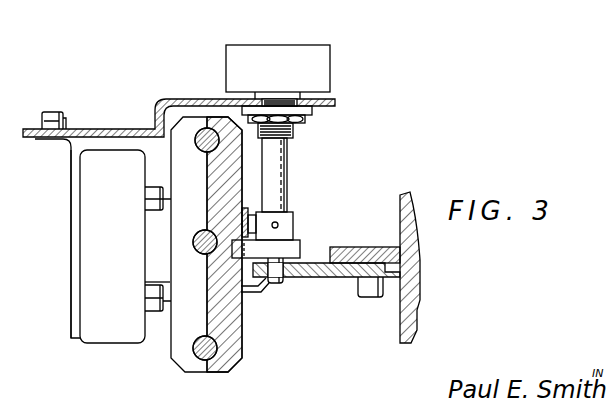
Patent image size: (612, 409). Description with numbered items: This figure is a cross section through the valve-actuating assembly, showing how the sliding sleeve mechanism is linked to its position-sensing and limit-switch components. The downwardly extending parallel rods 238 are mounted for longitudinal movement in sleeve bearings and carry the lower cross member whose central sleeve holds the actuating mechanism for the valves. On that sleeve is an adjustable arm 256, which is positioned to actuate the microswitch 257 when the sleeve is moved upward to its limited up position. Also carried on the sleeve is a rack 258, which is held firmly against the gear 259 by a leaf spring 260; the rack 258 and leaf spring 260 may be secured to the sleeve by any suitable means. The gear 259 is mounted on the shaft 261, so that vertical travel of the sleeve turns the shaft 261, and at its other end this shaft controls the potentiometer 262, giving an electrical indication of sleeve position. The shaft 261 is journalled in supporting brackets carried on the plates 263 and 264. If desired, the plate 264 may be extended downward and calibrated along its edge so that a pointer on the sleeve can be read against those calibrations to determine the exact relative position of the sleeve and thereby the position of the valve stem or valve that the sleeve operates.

The parallel rods 238 is at (196, 147).
The adjustable arm 256 is at (163, 282).
The microswitch 257 is at (93, 190).
The rack 258 is at (250, 248).
The gear 259 is at (285, 253).
The leaf spring 260 is at (209, 244).
The shaft 261 is at (280, 163).
The potentiometer 262 is at (262, 45).
The plate 263 is at (197, 99).
The plate 264 is at (310, 278).